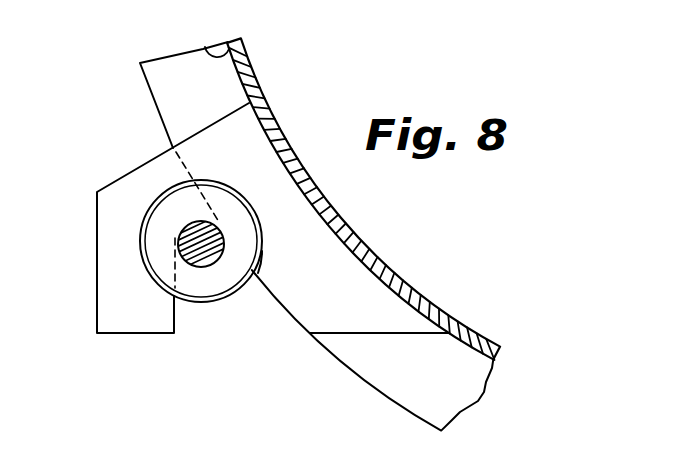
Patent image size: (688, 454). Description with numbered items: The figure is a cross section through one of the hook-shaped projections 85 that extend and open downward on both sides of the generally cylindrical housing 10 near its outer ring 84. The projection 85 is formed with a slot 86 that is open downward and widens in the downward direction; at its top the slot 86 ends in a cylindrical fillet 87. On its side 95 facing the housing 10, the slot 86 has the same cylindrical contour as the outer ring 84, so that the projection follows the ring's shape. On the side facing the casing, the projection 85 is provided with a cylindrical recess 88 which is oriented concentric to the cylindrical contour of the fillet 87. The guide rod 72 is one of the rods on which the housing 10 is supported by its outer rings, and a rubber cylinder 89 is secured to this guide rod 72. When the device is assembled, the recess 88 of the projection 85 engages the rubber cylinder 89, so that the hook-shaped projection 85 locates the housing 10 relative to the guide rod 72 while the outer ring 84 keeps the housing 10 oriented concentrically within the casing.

The housing 10 is at (205, 47).
The guide rod 72 is at (222, 228).
The outer ring 84 is at (167, 100).
The hook-shaped projection 85 is at (122, 272).
The slot 86 is at (213, 310).
The cylindrical fillet 87 is at (183, 227).
The cylindrical recess 88 is at (264, 262).
The rubber cylinder 89 is at (251, 262).
The side 95 is at (288, 312).